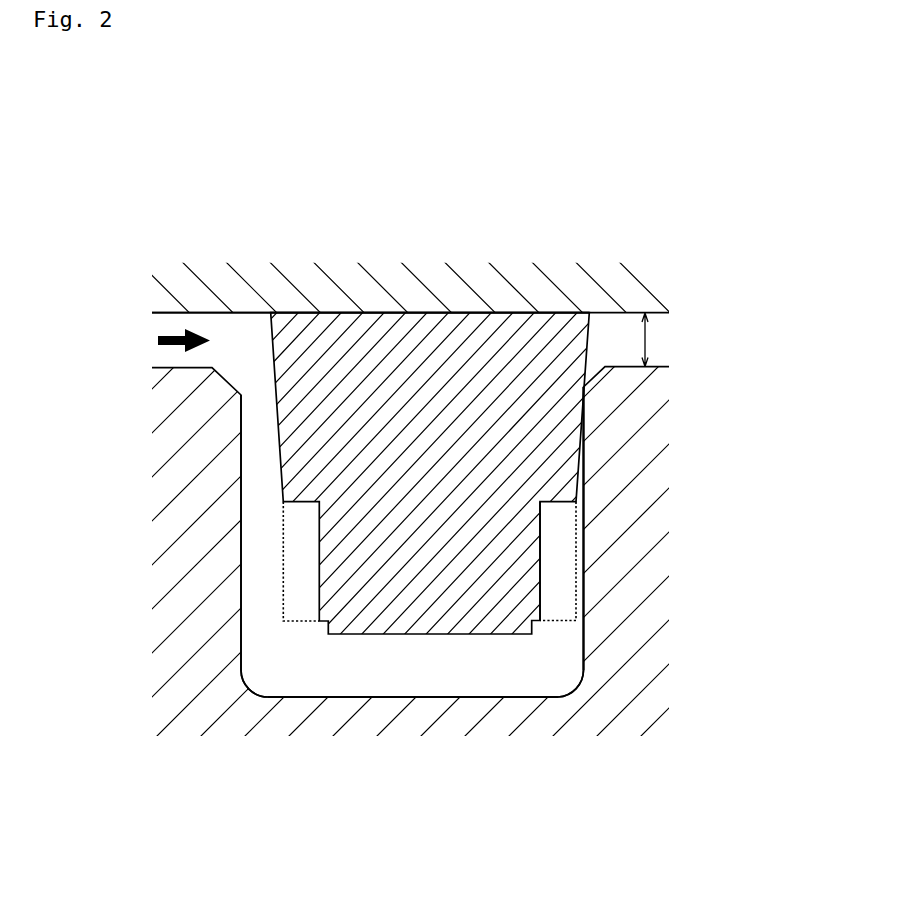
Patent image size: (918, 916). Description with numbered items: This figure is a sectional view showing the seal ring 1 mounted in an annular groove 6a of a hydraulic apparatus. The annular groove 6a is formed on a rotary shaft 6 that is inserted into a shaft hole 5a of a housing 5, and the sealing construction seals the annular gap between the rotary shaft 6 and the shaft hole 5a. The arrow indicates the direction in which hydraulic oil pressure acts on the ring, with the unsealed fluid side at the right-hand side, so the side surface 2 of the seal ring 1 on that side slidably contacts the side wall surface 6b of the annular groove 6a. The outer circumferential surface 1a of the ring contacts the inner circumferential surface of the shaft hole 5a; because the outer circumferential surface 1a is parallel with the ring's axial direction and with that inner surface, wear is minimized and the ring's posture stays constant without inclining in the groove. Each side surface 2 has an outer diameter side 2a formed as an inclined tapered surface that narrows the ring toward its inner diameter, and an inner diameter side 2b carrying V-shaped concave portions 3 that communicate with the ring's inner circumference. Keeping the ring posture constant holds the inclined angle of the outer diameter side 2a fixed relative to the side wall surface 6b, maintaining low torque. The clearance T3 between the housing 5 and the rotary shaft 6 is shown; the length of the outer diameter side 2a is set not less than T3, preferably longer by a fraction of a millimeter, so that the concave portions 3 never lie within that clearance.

The seal ring 1 is at (413, 347).
The outer circumferential surface 1a is at (535, 313).
The side surface 2 is at (748, 440).
The outer diameter side 2a is at (580, 457).
The inner diameter side 2b is at (576, 523).
The concave portion 3 is at (542, 560).
The housing 5 is at (317, 285).
The shaft hole 5a is at (182, 309).
The rotary shaft 6 is at (600, 713).
The annular groove 6a is at (382, 697).
The side wall surface 6b is at (577, 635).
The clearance T3 is at (670, 340).